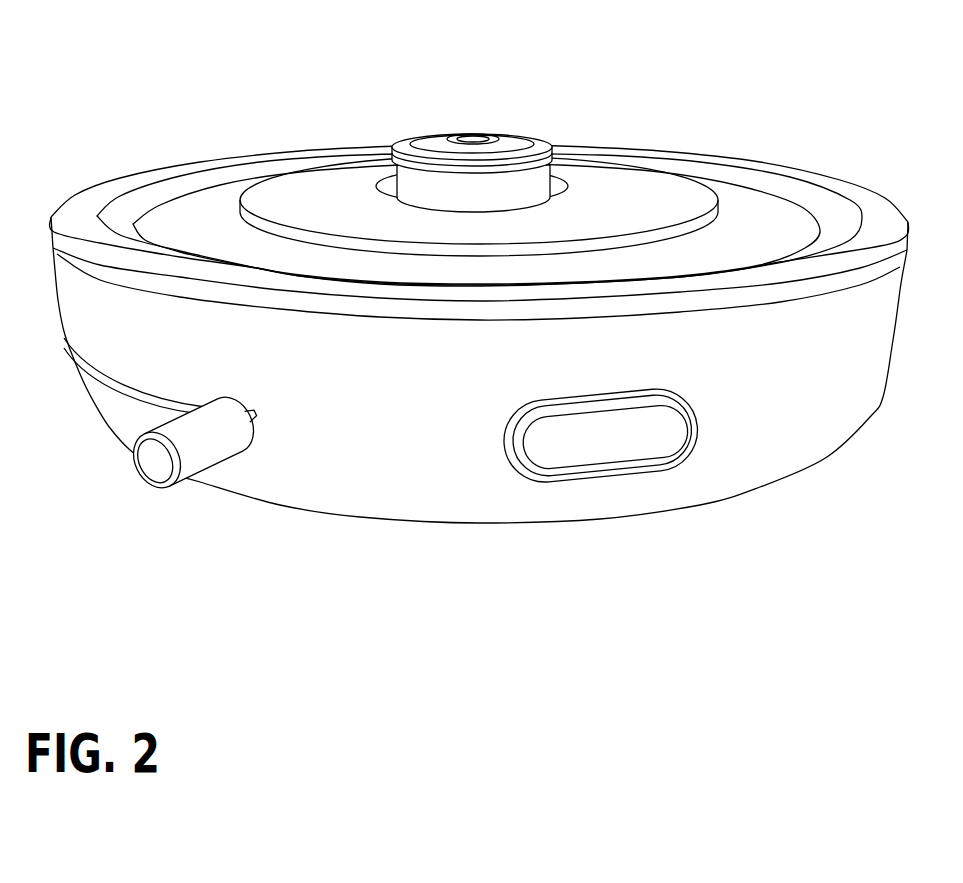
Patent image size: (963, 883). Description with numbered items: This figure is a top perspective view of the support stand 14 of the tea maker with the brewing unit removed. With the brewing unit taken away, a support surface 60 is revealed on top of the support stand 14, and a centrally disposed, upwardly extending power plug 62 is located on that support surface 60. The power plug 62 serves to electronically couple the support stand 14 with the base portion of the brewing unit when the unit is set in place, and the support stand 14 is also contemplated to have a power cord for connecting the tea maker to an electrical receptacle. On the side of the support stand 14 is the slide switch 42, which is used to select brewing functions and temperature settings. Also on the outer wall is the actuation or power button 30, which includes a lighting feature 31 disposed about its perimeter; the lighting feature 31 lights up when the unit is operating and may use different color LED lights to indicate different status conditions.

The support stand 14 is at (182, 120).
The support surface 60 is at (133, 203).
The power plug 62 is at (540, 135).
The slide switch 42 is at (150, 487).
The power button 30 is at (623, 443).
The lighting feature 31 is at (688, 445).